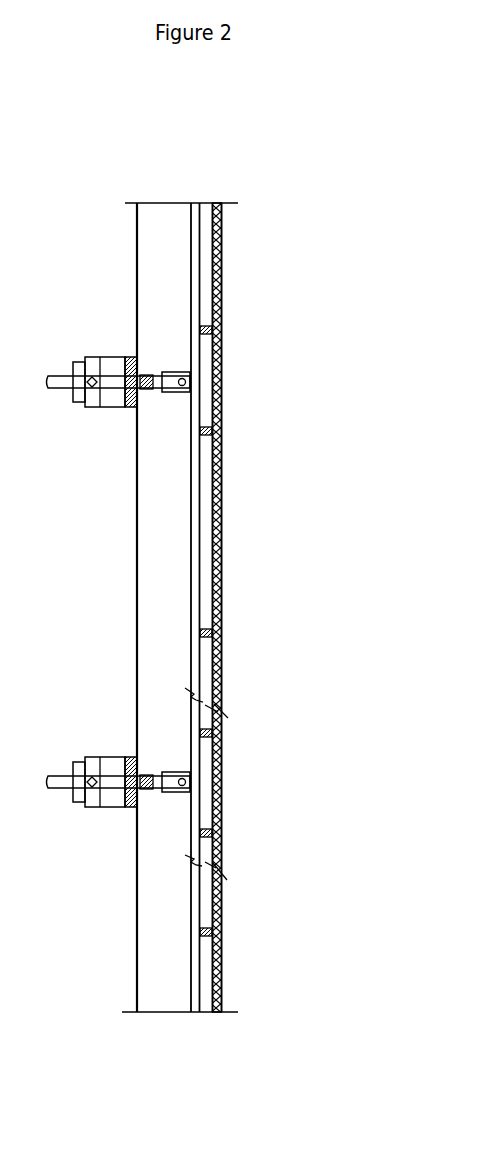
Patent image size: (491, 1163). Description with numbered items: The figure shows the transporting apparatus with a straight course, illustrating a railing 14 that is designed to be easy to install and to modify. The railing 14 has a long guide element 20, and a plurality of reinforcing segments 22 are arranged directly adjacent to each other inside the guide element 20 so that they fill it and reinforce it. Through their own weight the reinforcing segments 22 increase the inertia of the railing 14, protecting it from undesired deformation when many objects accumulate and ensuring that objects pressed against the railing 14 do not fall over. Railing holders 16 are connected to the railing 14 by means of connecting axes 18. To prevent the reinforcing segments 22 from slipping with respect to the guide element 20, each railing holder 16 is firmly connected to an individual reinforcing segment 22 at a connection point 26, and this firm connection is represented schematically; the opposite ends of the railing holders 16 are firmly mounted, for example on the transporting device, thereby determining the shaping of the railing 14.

The railing 14 is at (207, 197).
The railing holder 16 is at (101, 357).
The connecting axis 18 is at (134, 360).
The guide element 20 is at (225, 247).
The reinforcing segment 22 is at (216, 295).
The connection point 26 is at (182, 378).